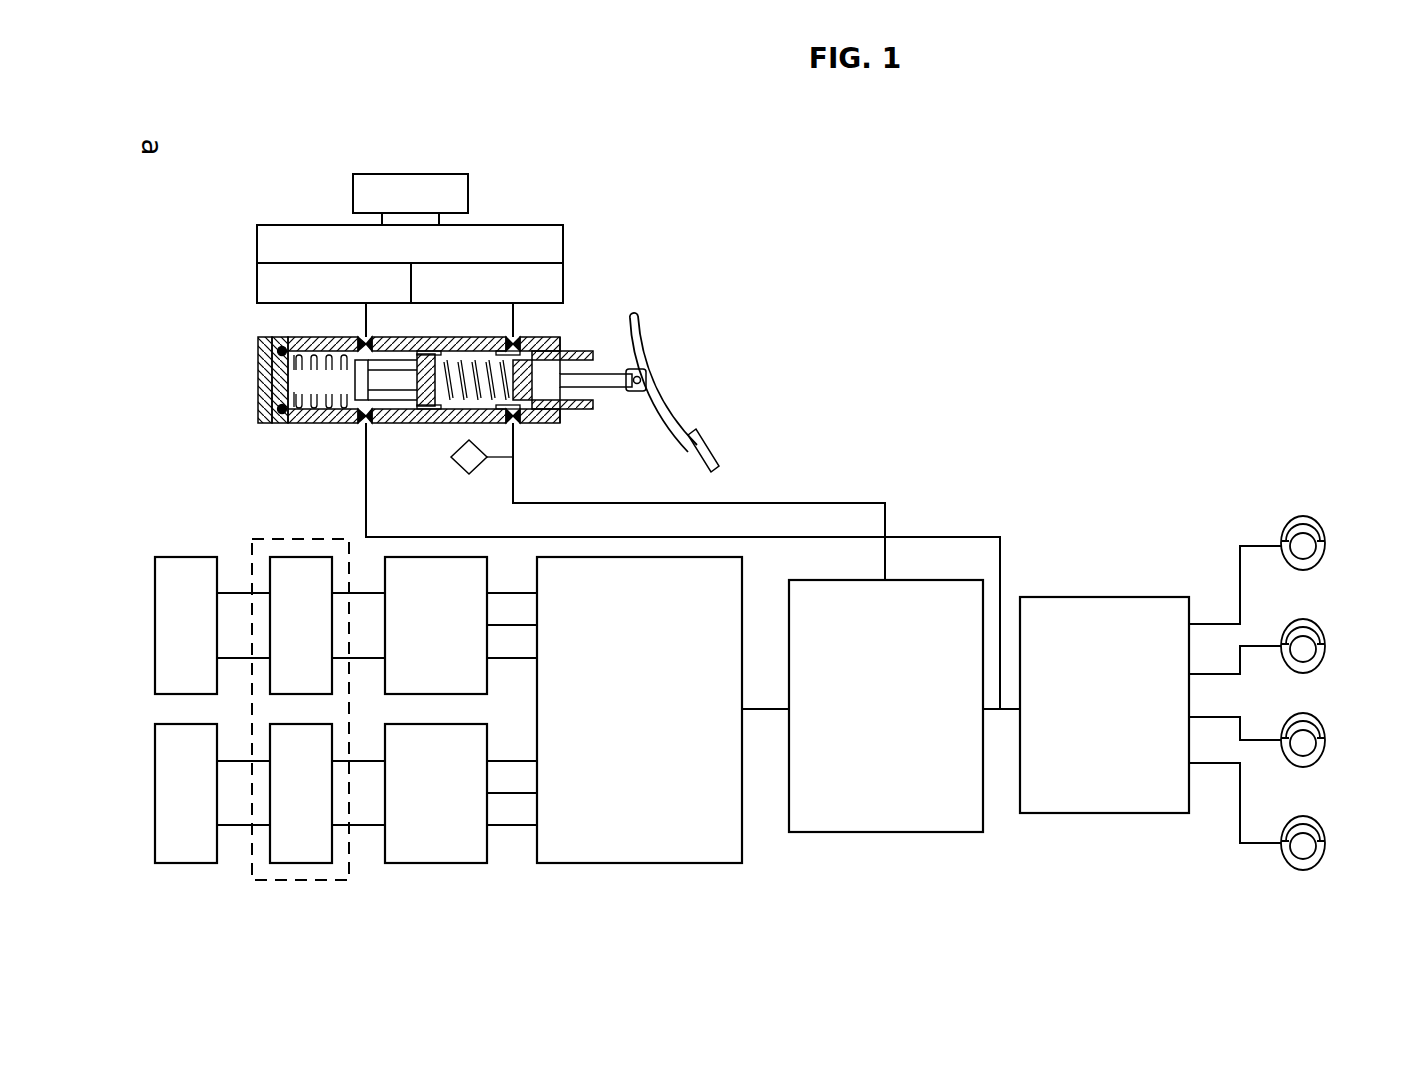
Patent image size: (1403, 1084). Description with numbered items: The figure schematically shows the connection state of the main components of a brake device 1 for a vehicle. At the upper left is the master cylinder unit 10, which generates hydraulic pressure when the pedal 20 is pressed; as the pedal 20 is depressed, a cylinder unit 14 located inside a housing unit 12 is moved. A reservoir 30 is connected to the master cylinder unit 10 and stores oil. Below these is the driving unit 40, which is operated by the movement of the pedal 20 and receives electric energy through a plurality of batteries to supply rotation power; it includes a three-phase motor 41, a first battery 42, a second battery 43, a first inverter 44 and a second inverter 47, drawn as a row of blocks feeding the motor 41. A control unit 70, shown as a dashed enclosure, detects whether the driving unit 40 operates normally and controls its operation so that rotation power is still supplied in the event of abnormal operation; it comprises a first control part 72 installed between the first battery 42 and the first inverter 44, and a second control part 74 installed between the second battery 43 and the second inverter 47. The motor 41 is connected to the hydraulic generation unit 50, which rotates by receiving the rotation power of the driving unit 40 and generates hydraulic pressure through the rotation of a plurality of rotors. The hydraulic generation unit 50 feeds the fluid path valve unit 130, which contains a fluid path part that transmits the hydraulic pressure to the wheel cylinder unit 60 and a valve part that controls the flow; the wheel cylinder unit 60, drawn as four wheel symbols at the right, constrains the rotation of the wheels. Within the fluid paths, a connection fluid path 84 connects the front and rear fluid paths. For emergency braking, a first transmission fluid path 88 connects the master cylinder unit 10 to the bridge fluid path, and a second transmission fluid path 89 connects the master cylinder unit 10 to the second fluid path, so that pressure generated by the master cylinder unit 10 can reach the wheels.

The brake device for a vehicle 1 is at (1078, 222).
The master cylinder unit 10 is at (222, 383).
The housing unit 12 is at (282, 418).
The cylinder unit 14 is at (555, 367).
The pedal 20 is at (660, 417).
The reservoir 30 is at (513, 224).
The driving unit 40 is at (765, 885).
The 3-phase motor 41 is at (643, 864).
The first battery 42 is at (183, 557).
The second battery 43 is at (184, 864).
The first inverter 44 is at (489, 684).
The second inverter 47 is at (434, 864).
The hydraulic generation unit 50 is at (885, 833).
The wheel cylinder unit 60 is at (1278, 478).
The control unit 70 is at (347, 882).
The first control part 72 is at (298, 557).
The second control part 74 is at (299, 864).
The connection fluid path 84 is at (513, 320).
The first transmission fluid path 88 is at (806, 503).
The second transmission fluid path 89 is at (368, 496).
The fluid path valve unit 130 is at (1103, 597).